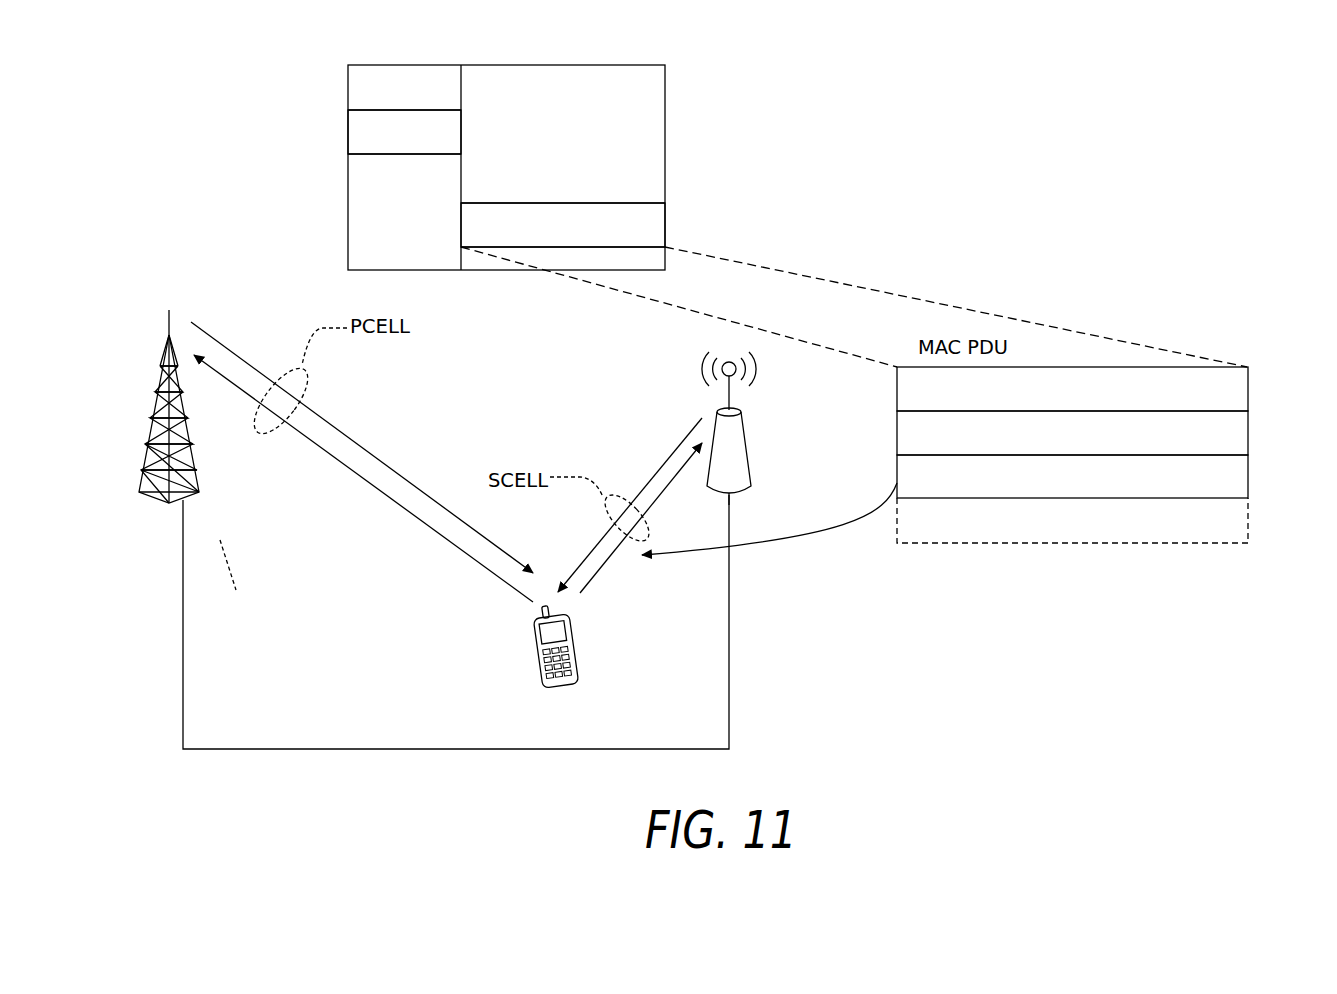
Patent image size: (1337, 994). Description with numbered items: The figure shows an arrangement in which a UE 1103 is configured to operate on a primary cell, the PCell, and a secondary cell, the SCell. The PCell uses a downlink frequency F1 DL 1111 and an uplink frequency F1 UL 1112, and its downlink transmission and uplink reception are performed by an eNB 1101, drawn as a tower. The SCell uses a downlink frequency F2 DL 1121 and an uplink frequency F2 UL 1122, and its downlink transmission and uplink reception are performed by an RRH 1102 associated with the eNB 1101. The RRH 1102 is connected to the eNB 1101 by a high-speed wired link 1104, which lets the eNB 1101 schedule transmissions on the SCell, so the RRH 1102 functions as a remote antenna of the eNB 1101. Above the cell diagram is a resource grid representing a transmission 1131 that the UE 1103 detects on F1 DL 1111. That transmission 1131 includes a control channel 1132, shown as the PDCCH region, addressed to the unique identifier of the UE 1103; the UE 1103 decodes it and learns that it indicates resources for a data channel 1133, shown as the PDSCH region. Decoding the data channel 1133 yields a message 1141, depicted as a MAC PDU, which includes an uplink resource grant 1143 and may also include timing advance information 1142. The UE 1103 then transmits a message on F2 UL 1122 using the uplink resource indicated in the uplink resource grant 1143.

The eNB 1101 is at (152, 405).
The RRH 1102 is at (752, 455).
The UE 1103 is at (535, 656).
The high-speed wired link 1104 is at (427, 749).
The downlink frequency F1 DL 1111 is at (393, 471).
The uplink frequency F1 UL 1112 is at (378, 490).
The downlink frequency F2 DL 1121 is at (597, 544).
The uplink frequency F2 UL 1122 is at (602, 567).
The transmission 1131 is at (665, 167).
The control channel 1132 is at (348, 132).
The data channel 1133 is at (665, 223).
The message 1141 is at (897, 392).
The timing advance information 1142 is at (897, 433).
The uplink resource grant 1143 is at (1248, 478).